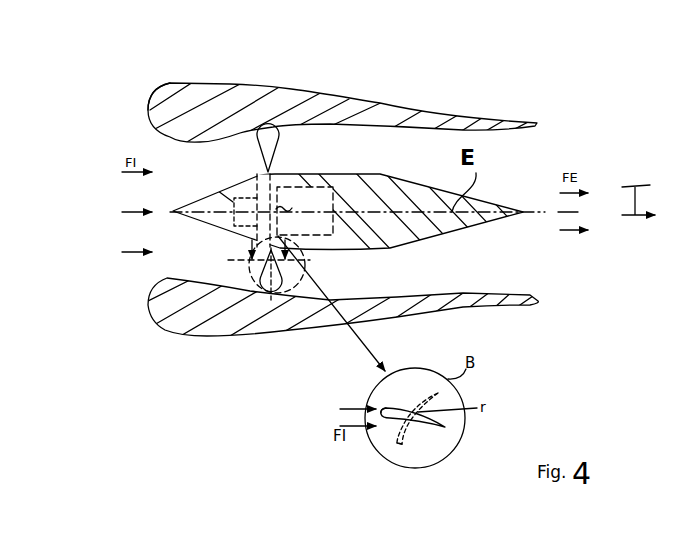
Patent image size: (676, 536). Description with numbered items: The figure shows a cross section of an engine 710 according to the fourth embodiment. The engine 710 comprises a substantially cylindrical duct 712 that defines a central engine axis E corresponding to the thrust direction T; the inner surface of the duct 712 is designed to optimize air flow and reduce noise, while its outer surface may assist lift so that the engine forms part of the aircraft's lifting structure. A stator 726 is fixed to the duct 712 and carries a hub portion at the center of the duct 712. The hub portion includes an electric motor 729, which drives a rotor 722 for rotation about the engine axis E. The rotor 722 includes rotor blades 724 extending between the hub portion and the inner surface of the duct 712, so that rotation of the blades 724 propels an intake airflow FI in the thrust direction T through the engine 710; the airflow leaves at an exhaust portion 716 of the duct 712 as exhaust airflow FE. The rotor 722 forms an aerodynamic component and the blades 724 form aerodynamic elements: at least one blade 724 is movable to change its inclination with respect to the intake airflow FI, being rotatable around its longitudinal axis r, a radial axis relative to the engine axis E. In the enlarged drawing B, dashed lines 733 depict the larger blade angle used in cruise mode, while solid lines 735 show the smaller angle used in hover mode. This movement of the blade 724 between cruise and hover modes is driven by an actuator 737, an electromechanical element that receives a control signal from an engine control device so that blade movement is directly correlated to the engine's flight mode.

The engine 710 is at (155, 78).
The duct 712 is at (152, 117).
The exhaust portion 716 is at (493, 302).
The rotor 722 is at (268, 176).
The rotor blades 724 is at (271, 137).
The stator 726 is at (362, 275).
The electric motor 729 is at (340, 190).
The dashed lines 733 is at (408, 433).
The solid lines 735 is at (380, 407).
The actuator 737 is at (234, 197).